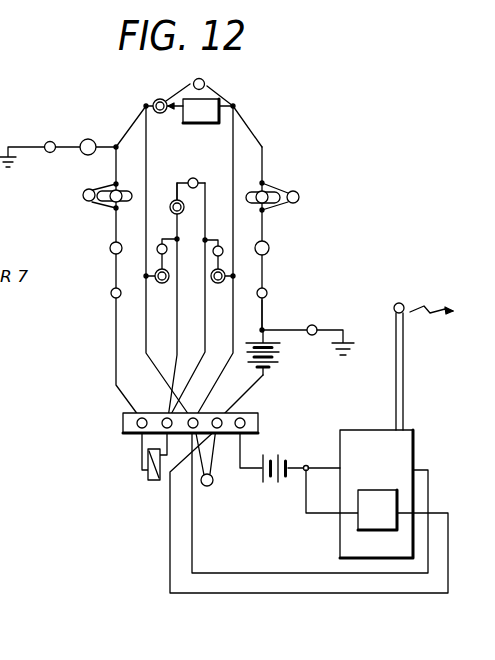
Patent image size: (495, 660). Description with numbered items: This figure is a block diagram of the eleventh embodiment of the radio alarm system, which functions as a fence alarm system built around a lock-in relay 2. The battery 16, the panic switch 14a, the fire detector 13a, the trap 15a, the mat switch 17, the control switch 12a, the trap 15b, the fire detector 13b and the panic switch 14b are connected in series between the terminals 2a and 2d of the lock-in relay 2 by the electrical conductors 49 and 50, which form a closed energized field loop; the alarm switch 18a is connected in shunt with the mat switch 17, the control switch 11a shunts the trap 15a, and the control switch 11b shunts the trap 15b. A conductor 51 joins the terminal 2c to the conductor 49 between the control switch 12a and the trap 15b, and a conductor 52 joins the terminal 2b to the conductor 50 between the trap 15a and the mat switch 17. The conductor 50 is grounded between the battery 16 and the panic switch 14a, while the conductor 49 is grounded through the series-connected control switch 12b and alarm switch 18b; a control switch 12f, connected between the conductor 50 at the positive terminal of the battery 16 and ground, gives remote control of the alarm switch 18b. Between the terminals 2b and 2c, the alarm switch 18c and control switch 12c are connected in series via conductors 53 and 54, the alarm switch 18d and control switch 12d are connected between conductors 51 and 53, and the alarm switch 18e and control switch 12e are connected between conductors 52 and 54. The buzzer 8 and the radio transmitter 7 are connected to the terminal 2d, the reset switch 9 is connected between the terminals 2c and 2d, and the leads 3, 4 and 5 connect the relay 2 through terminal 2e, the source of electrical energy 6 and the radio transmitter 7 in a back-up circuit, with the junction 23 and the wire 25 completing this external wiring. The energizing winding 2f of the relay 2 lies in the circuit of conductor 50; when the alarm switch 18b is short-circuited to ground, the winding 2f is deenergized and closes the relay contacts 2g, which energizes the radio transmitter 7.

The lock-in relay 2 is at (152, 404).
The terminal of the lock-in relay 2a is at (142, 417).
The terminal of the lock-in relay 2b is at (166, 417).
The terminal of the lock-in relay 2c is at (196, 417).
The terminal of the lock-in relay 2d is at (221, 417).
The terminal of the lock-in relay 2e is at (243, 417).
The energizing winding of the lock-in relay 2f is at (154, 480).
The relay contacts 2g is at (222, 432).
The electrically conductive lead 3 is at (245, 466).
The electrically conductive lead 4 is at (328, 470).
The electrically conductive lead 5 is at (209, 561).
The source of electrical energy 6 is at (284, 484).
The radio transmitter 7 is at (446, 613).
The buzzer 8 is at (358, 527).
The reset switch 9 is at (202, 486).
The control switch 11a is at (299, 194).
The control switch 11b is at (83, 197).
The control switch 12a is at (142, 106).
The control switch 12b is at (85, 155).
The control switch 12c is at (170, 211).
The control switch 12d is at (159, 284).
The control switch 12e is at (216, 284).
The control switch 12f is at (310, 336).
The fire detector 13a is at (268, 244).
The fire detector 13b is at (110, 250).
The panic switch 14a is at (266, 289).
The panic switch 14b is at (111, 295).
The trap 15a is at (270, 186).
The trap 15b is at (101, 204).
The battery 16 is at (277, 355).
The mat switch 17 is at (220, 106).
The alarm switch 18a is at (207, 82).
The alarm switch 18b is at (47, 152).
The alarm switch 18c is at (209, 169).
The alarm switch 18d is at (156, 244).
The alarm switch 18e is at (221, 245).
The junction 23 is at (306, 466).
The wire 25 is at (448, 583).
The electrical conductor 49 is at (116, 361).
The electrical conductor 50 is at (262, 318).
The electrical conductor 51 is at (146, 320).
The electrical conductor 52 is at (233, 143).
The electrical conductor 53 is at (177, 343).
The electrical conductor 54 is at (205, 347).